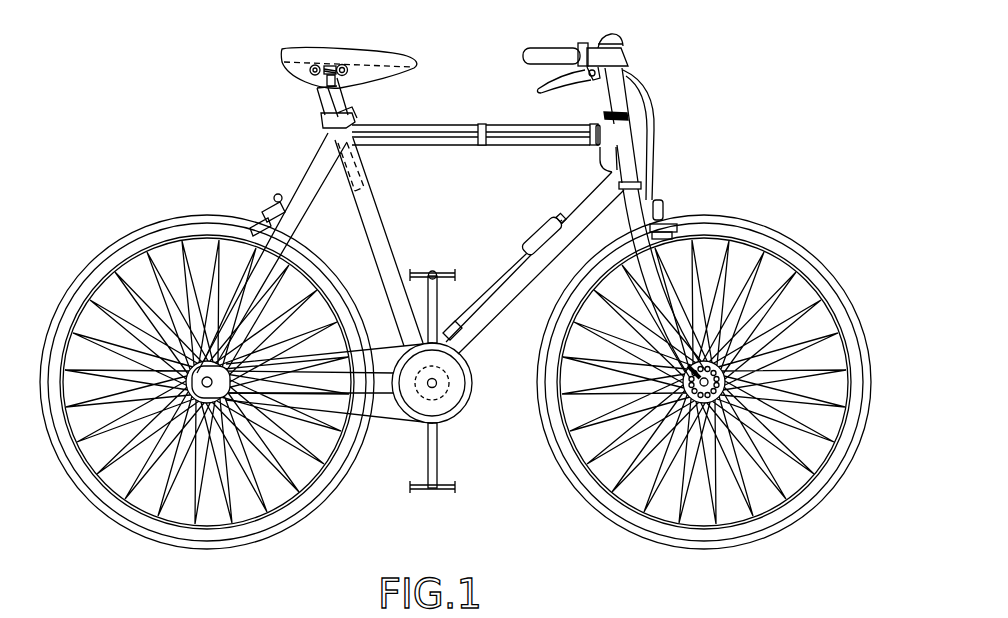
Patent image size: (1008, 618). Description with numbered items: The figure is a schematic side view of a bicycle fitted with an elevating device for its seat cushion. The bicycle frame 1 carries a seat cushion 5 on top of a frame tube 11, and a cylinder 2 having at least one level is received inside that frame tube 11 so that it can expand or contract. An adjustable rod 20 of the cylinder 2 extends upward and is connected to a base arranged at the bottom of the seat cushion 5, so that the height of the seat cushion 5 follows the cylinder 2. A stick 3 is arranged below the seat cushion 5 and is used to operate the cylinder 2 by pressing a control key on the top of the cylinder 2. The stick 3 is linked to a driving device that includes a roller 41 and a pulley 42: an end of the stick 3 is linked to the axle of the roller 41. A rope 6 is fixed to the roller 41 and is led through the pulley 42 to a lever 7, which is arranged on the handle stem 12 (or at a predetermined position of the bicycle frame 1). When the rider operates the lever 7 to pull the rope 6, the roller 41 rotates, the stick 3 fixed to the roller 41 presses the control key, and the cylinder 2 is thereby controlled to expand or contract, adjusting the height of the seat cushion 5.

The bicycle frame 1 is at (457, 145).
The cylinder 2 is at (357, 167).
The stick 3 is at (328, 66).
The seat cushion 5 is at (387, 55).
The rope 6 is at (320, 107).
The lever 7 is at (613, 37).
The frame tube 11 is at (383, 213).
The handle stem 12 is at (550, 48).
The adjustable rod 20 is at (342, 100).
The roller 41 is at (343, 70).
The pulley 42 is at (315, 67).